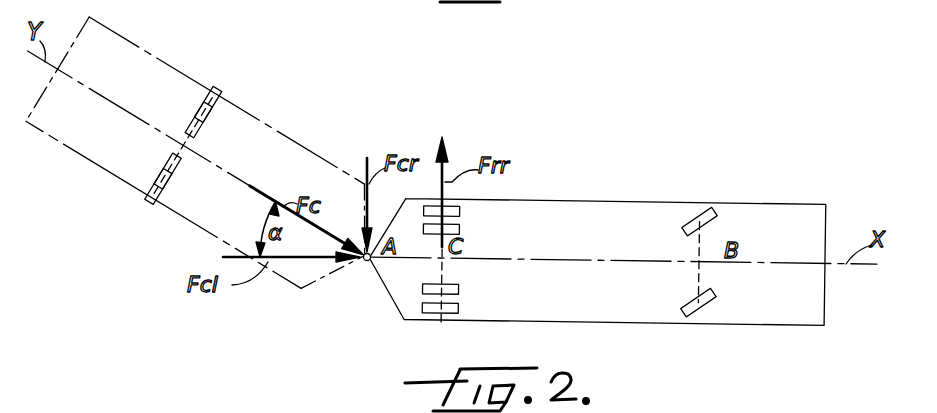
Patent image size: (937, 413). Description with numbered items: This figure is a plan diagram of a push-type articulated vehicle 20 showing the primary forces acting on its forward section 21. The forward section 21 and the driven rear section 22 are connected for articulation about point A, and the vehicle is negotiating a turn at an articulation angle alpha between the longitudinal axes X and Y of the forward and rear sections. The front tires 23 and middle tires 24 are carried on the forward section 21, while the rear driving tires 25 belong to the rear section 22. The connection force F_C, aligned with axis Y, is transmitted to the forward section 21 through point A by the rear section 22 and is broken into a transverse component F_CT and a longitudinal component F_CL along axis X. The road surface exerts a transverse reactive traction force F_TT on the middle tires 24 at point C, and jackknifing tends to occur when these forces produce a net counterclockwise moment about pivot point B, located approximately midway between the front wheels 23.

The push-type articulated vehicle 20 is at (292, 318).
The forward section 21 is at (587, 202).
The rear section 22 is at (98, 169).
The front tires 23 is at (698, 214).
The middle tires 24 is at (460, 230).
The rear driving tires 25 is at (224, 104).